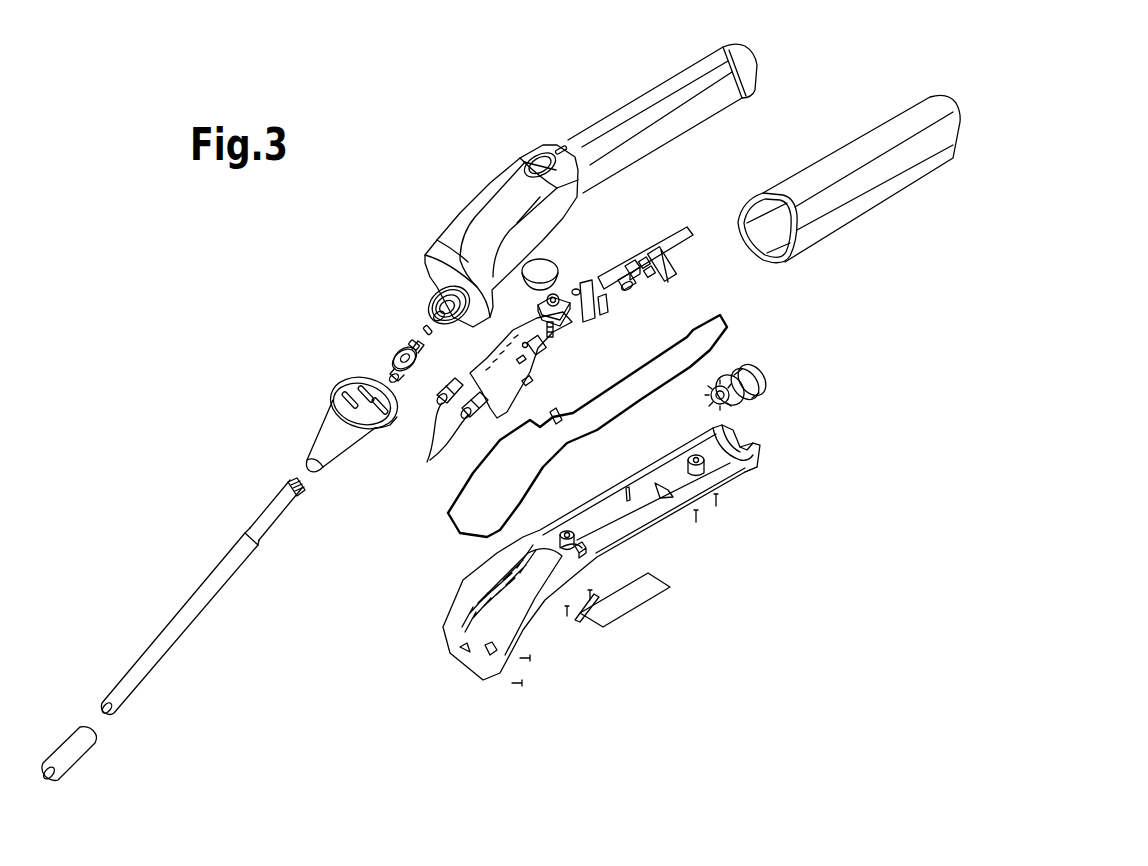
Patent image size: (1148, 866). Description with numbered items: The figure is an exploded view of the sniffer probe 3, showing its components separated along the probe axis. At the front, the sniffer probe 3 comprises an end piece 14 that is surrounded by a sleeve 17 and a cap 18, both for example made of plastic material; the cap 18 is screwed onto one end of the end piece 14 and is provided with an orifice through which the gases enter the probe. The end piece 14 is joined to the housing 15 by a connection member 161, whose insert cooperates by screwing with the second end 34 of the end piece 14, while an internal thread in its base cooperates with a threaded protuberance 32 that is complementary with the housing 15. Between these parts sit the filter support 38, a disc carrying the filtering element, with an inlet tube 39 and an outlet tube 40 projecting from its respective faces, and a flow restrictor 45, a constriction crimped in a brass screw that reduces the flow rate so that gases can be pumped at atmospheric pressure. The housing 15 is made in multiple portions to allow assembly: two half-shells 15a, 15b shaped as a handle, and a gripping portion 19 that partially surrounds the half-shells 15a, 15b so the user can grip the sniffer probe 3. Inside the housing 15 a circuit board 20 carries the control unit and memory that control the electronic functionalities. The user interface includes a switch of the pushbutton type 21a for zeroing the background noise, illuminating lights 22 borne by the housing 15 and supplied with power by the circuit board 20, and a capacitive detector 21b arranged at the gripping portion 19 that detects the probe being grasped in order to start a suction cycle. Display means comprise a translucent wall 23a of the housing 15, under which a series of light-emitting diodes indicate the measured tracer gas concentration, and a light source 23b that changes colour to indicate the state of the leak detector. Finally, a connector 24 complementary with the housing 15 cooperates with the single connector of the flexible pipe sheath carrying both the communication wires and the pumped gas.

The sniffer probe 3 is at (453, 88).
The end piece 14 is at (257, 523).
The housing 15 is at (610, 101).
The half-shell 15a is at (672, 87).
The half-shell 15b is at (735, 488).
The sleeve 17 is at (177, 657).
The cap 18 is at (88, 767).
The gripping portion 19 is at (838, 130).
The circuit board 20 is at (657, 230).
The switch of the pushbutton type 21a is at (560, 293).
The capacitive detector 21b is at (727, 323).
The illuminating lights 22 is at (450, 447).
The translucent wall 23a is at (470, 222).
The light source 23b is at (583, 290).
The connector 24 is at (765, 382).
The threaded protuberance 32 is at (440, 300).
The second end 34 is at (293, 480).
The support 38 is at (383, 347).
The inlet tube 39 is at (387, 360).
The outlet tube 40 is at (401, 342).
The flow restrictor 45 is at (421, 327).
The connection member 161 is at (305, 423).